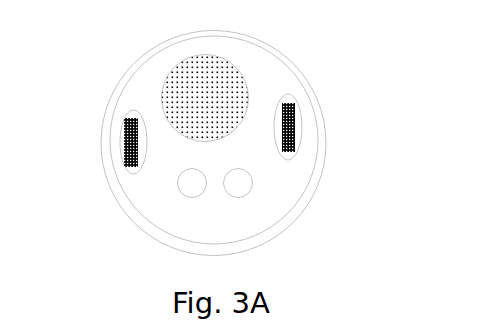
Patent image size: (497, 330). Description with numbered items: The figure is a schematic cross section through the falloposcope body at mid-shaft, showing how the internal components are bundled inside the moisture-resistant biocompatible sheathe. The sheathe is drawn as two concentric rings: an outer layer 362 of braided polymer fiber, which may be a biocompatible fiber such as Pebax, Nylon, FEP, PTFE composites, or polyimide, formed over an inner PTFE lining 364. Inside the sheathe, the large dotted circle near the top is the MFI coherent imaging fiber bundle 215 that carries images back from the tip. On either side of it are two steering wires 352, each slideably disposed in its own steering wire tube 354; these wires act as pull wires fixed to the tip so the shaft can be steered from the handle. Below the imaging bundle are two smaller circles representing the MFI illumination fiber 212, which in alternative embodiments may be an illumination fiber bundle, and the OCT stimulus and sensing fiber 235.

The layer of braided polymer fiber 362 is at (295, 65).
The PTFE lining 364 is at (135, 75).
The MFI coherent imaging fiber bundle 215 is at (218, 75).
The steering wire 352 is at (123, 128).
The steering wire tube 354 is at (118, 150).
The MFI illumination fiber 212 is at (177, 183).
The OCT stimulus and sensing fiber 235 is at (253, 183).